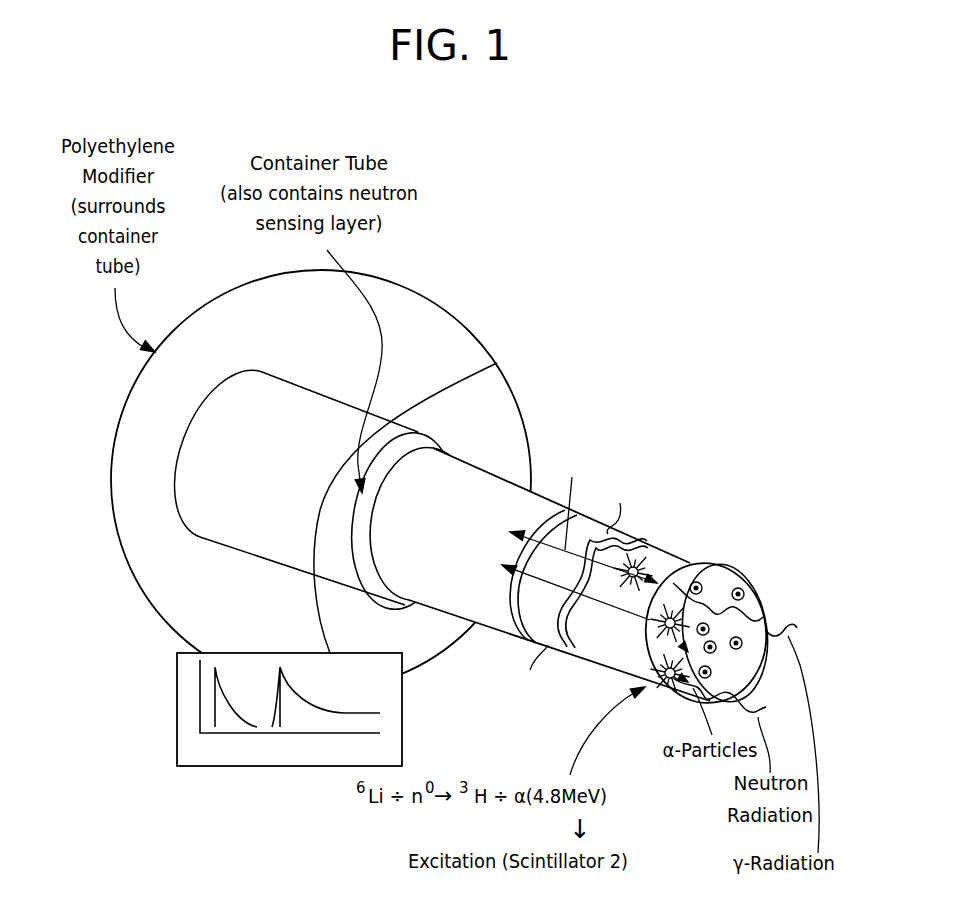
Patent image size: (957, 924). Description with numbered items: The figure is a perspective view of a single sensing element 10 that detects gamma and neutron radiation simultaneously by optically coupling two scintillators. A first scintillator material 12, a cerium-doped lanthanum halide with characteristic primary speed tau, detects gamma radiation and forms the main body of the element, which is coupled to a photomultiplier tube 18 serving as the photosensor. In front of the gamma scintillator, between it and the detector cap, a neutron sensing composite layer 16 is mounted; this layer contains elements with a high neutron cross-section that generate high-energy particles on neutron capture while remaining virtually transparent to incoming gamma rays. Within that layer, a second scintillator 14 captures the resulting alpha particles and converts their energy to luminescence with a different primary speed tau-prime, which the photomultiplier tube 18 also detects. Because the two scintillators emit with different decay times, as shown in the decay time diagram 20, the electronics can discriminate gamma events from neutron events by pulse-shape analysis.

The sensing element 10 is at (660, 233).
The first scintillator material 12 is at (660, 565).
The second scintillator 14 is at (756, 598).
The neutron sensing composite layer 16 is at (740, 516).
The photomultiplier tube 18 is at (499, 466).
The decay time diagram 20 is at (177, 700).